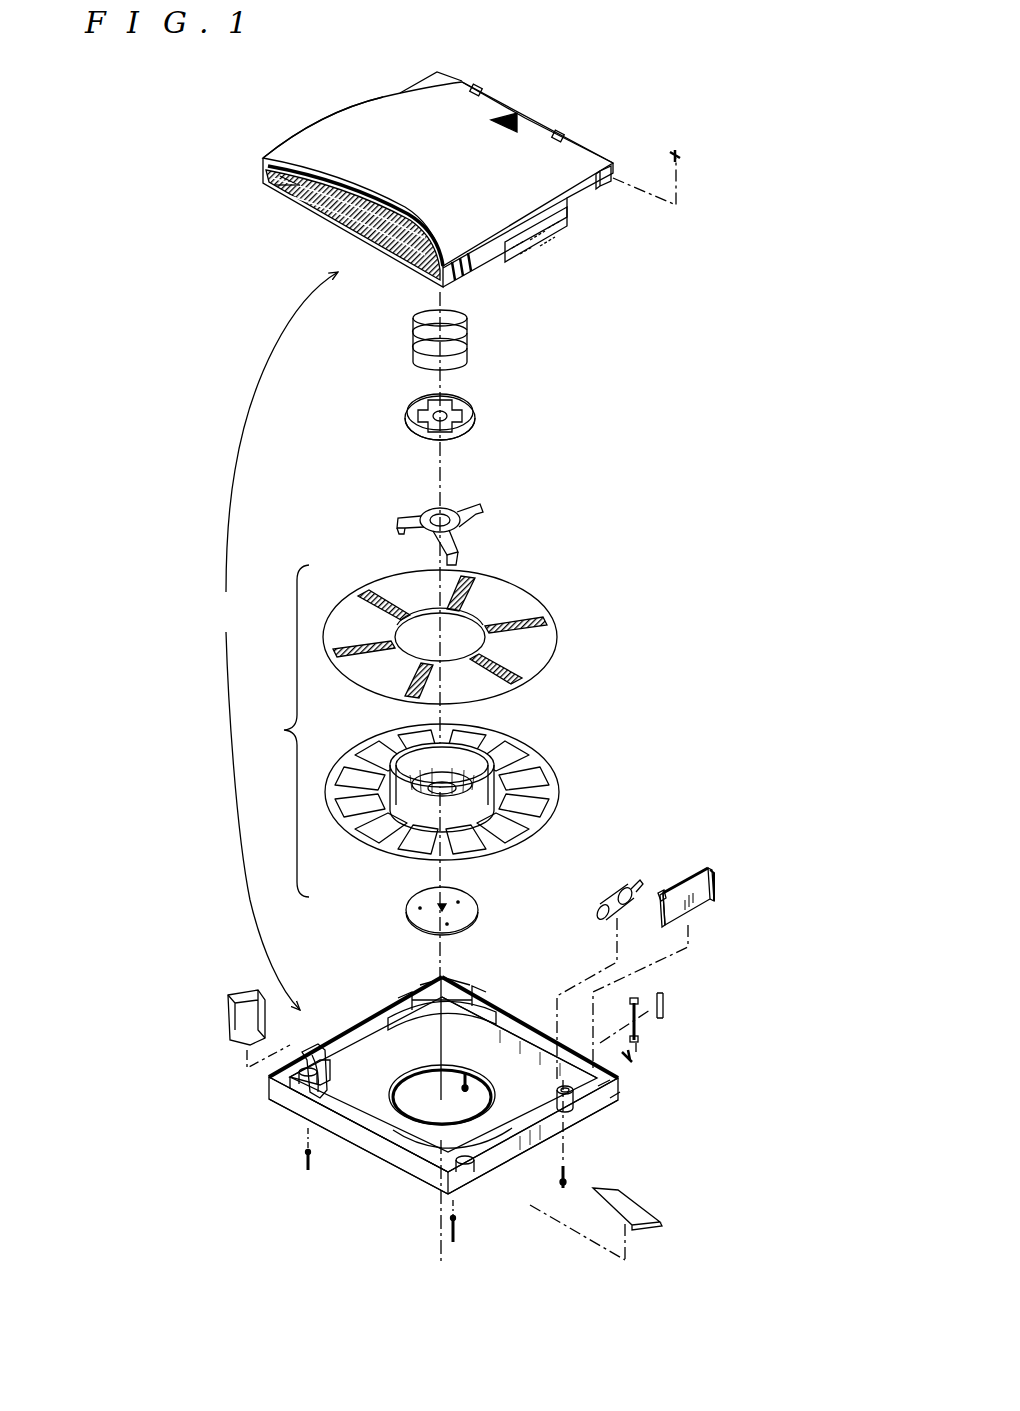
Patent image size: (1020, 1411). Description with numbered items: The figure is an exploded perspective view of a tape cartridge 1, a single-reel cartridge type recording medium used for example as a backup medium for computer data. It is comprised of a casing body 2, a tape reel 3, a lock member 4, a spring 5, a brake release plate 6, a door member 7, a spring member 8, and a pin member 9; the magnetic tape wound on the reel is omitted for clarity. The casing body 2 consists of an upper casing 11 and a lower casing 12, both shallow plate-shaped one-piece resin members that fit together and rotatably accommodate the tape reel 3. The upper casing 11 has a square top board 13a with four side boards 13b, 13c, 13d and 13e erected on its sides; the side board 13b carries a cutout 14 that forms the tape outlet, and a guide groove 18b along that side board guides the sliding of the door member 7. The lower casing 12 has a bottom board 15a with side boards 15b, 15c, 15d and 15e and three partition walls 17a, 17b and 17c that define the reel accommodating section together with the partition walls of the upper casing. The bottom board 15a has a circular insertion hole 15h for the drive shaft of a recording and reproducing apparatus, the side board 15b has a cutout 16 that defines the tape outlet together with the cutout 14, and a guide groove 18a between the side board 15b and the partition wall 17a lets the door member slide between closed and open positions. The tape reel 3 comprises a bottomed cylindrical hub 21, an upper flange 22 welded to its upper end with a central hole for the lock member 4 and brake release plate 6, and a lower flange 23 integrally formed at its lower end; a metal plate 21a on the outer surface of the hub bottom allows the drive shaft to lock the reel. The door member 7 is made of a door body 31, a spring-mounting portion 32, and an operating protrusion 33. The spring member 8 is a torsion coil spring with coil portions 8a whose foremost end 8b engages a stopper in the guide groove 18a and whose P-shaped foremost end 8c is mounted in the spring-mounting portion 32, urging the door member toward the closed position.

The tape cartridge 1 is at (305, 95).
The casing body 2 is at (277, 641).
The tape reel 3 is at (284, 731).
The lock member 4 is at (482, 415).
The spring 5 is at (463, 343).
The brake release plate 6 is at (480, 510).
The door member 7 is at (695, 900).
The spring member 8 is at (627, 910).
The coil portion 8a is at (608, 910).
The foremost end 8b is at (582, 940).
The foremost end 8c is at (642, 883).
The pin member 9 is at (637, 1027).
The upper casing 11 is at (547, 127).
The lower casing 12 is at (307, 1107).
The top board 13a is at (573, 167).
The side board 13b is at (483, 250).
The side board 13c is at (313, 203).
The side board 13d is at (312, 133).
The side board 13e is at (497, 93).
The cutout 14 is at (602, 195).
The bottom board 15a is at (382, 1063).
The side board 15b is at (515, 1153).
The side board 15c is at (368, 1142).
The side board 15d is at (348, 1022).
The side board 15e is at (497, 1012).
The insertion hole 15h is at (403, 1000).
The cutout 16 is at (602, 1120).
The partition wall 17a is at (423, 1140).
The partition wall 17b is at (345, 1087).
The partition wall 17c is at (420, 1097).
The guide groove 18a is at (527, 1127).
The guide groove 18b is at (542, 227).
The hub 21 is at (413, 805).
The metal plate 21a is at (412, 908).
The upper flange 22 is at (383, 585).
The lower flange 23 is at (378, 742).
The door body 31 is at (690, 868).
The spring-mounting portion 32 is at (660, 895).
The operating protrusion 33 is at (713, 880).